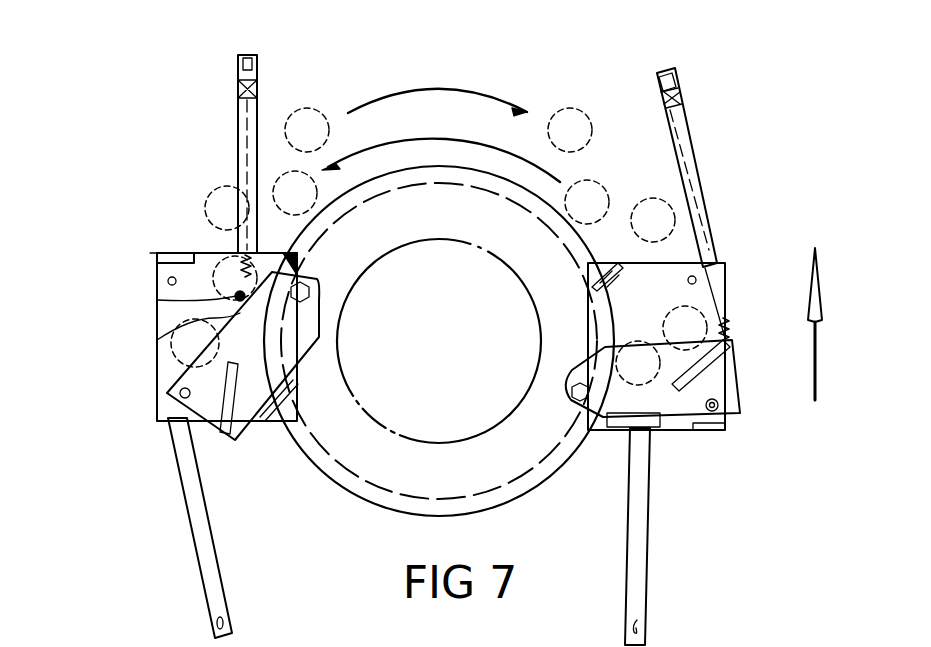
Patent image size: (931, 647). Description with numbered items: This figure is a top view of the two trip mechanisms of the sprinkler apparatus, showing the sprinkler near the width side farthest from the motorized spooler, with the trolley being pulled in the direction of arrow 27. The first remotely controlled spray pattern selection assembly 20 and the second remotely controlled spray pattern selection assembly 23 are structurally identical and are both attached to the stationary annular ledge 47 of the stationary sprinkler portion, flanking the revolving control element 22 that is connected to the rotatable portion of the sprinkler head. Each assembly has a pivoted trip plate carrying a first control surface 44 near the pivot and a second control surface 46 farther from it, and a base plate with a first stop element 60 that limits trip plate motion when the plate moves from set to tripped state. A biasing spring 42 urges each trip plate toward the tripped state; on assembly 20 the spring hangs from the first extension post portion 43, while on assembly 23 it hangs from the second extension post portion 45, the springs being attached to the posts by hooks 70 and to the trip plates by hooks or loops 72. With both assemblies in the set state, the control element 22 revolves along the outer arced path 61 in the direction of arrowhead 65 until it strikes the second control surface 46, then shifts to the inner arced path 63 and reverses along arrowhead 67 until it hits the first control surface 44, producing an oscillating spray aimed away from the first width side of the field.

The first remotely controlled spray pattern selection assembly 20 is at (745, 282).
The revolving control element 22 is at (323, 110).
The second remotely controlled spray pattern selection assembly 23 is at (135, 250).
The arrow 27 is at (816, 365).
The biasing spring 42 is at (243, 78).
The first extension post portion 43 is at (198, 543).
The first control surface 44 is at (215, 325).
The second extension post portion 45 is at (237, 124).
The second control surface 46 is at (245, 430).
The stationary annular ledge 47 is at (513, 455).
The first stop element 60 is at (172, 253).
The outer arced path 61 is at (465, 90).
The inner arced path 63 is at (407, 132).
The arrowhead 65 is at (512, 106).
The arrowhead 67 is at (338, 165).
The hooks 70 is at (252, 65).
The hooks or loops 72 is at (157, 300).